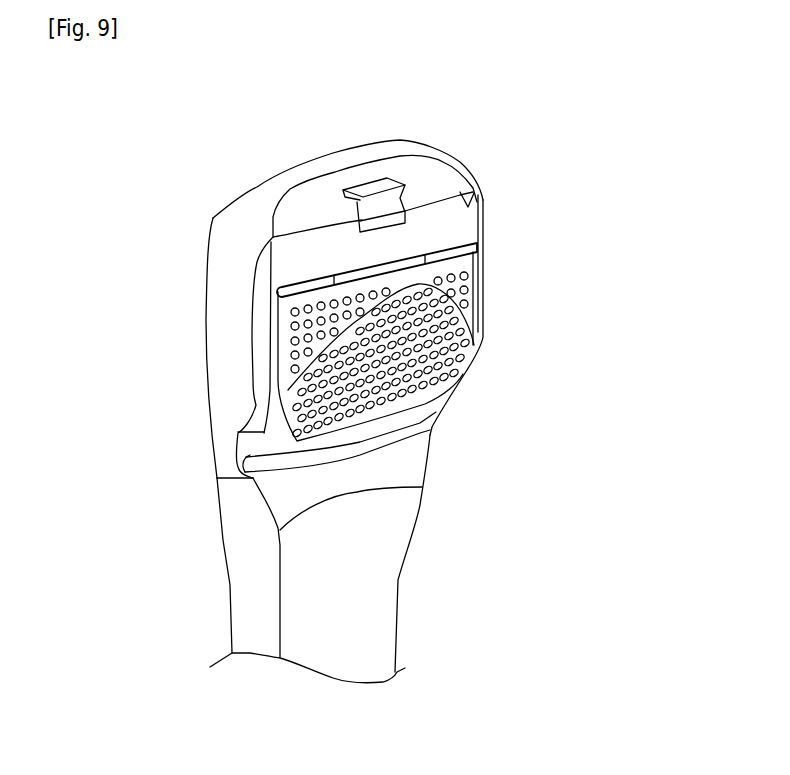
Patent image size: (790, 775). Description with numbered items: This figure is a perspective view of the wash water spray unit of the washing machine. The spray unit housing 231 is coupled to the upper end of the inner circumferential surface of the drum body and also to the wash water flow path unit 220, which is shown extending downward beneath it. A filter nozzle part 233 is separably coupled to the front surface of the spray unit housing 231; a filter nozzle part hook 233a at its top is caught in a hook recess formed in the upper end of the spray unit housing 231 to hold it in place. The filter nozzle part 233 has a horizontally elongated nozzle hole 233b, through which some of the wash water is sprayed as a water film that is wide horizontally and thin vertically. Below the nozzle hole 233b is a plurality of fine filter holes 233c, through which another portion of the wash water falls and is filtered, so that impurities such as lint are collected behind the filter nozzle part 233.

The wash water flow path unit 220 is at (368, 583).
The spray unit housing 231 is at (440, 162).
The filter nozzle part 233 is at (458, 221).
The filter nozzle part hook 233a is at (367, 180).
The nozzle hole 233b is at (355, 273).
The filter holes 233c is at (349, 357).